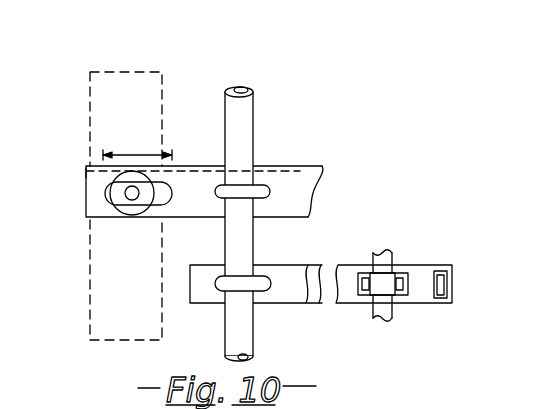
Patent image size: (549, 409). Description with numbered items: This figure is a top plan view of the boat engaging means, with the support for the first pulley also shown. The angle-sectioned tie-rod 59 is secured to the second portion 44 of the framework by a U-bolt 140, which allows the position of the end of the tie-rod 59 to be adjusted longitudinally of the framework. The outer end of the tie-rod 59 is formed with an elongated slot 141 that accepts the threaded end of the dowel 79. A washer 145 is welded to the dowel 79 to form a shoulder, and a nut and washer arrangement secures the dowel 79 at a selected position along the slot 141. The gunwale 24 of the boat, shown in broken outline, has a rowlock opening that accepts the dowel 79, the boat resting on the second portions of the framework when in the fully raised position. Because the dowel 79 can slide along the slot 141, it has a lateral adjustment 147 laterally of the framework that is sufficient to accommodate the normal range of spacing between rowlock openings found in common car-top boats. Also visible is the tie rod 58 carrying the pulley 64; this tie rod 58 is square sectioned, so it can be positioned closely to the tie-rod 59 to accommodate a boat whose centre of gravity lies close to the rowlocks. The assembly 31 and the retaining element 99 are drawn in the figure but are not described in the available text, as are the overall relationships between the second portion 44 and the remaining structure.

The gunwale 24 is at (127, 50).
The support assembly 31 is at (268, 111).
The second portion 44 is at (236, 118).
The tie rod 58 is at (267, 304).
The tie-rod 59 is at (313, 190).
The pulley 64 is at (394, 312).
The dowel 79 is at (132, 198).
The retaining clip 99 is at (232, 284).
The U-bolt 140 is at (260, 189).
The elongated slot 141 is at (167, 205).
The washer 145 is at (86, 174).
The lateral adjustment 147 is at (137, 145).